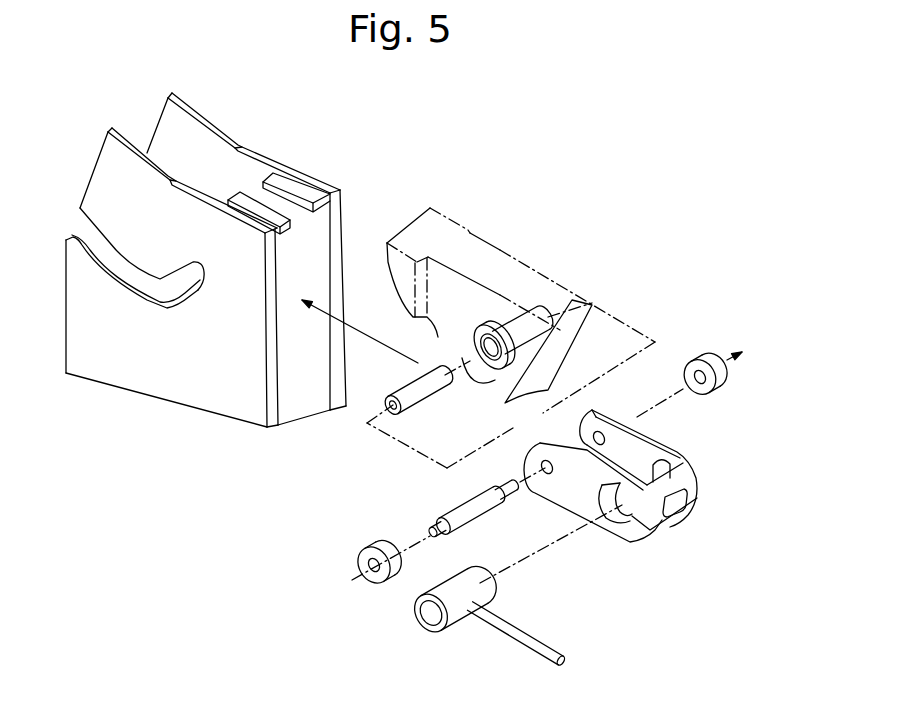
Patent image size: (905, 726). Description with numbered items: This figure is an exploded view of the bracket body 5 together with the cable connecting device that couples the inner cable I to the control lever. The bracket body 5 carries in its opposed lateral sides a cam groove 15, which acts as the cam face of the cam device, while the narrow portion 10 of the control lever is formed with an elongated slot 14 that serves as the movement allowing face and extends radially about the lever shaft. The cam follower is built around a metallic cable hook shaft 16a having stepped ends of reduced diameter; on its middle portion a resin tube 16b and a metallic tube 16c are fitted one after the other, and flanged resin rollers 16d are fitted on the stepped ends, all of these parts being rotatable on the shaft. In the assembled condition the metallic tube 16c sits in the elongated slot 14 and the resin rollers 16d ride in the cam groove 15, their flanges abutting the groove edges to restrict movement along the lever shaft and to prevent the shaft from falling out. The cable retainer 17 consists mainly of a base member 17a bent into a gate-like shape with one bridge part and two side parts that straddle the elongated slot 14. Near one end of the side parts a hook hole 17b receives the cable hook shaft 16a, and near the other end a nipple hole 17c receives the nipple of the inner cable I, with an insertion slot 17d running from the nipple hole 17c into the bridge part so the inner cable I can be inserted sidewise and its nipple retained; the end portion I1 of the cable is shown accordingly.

The bracket body 5 is at (297, 167).
The cam groove 15 is at (145, 283).
The narrow portion 10 is at (493, 247).
The elongated slot 14 is at (478, 373).
The cable hook shaft 16a is at (462, 507).
The resin tube 16b is at (428, 402).
The metallic tube 16c is at (527, 318).
The resin rollers 16d is at (706, 358).
The cable retainer 17 is at (685, 476).
The base member 17a is at (698, 480).
The hook hole 17b is at (603, 438).
The nipple hole 17c is at (661, 470).
The insertion slot 17d is at (672, 508).
The inner cable I is at (537, 634).
The tool tip I1 is at (425, 618).